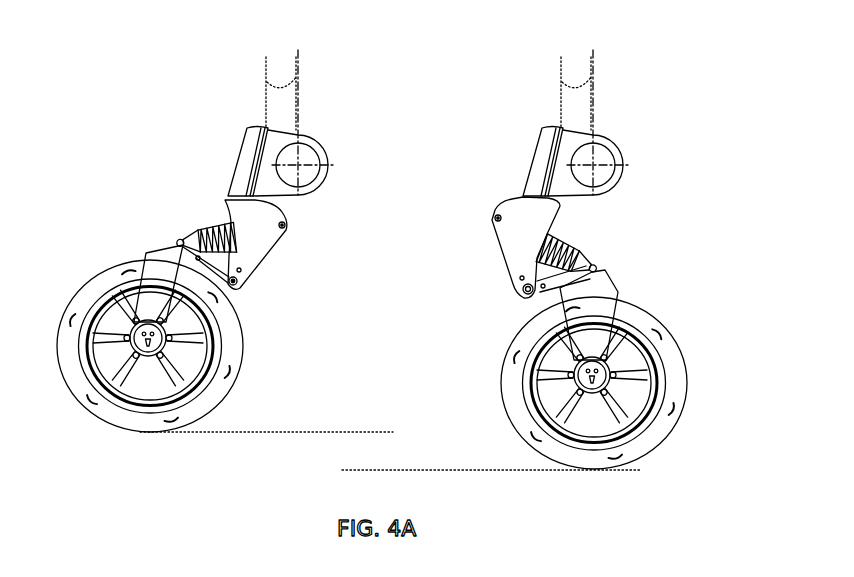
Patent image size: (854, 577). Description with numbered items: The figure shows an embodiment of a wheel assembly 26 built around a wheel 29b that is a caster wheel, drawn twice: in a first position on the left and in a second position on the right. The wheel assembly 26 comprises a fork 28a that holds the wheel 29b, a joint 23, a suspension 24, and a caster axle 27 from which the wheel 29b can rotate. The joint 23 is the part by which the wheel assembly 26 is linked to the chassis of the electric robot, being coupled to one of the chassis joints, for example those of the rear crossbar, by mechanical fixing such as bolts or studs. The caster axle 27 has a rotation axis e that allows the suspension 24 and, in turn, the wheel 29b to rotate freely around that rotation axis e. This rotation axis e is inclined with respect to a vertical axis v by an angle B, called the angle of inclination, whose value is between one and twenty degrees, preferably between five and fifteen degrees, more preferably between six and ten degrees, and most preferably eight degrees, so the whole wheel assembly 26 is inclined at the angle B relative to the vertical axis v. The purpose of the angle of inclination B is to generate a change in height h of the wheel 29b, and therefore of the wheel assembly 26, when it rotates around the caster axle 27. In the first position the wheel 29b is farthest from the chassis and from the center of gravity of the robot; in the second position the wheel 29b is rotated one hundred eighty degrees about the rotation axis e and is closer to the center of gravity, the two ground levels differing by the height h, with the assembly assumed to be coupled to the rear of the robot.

The angle of inclination B is at (280, 73).
The rotation axis e is at (262, 105).
The vertical axis v is at (297, 110).
The joint 23 is at (318, 145).
The suspension 24 is at (273, 240).
The wheel assembly 26 is at (192, 190).
The caster axle 27 is at (243, 147).
The fork 28a is at (167, 282).
The wheel 29b is at (237, 335).
The change in height h is at (370, 432).